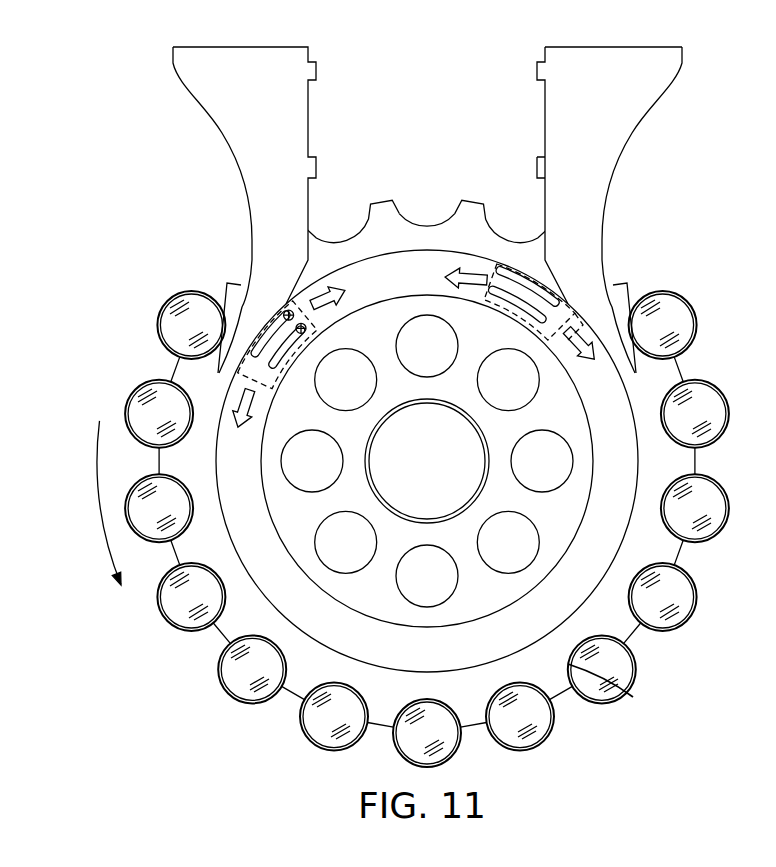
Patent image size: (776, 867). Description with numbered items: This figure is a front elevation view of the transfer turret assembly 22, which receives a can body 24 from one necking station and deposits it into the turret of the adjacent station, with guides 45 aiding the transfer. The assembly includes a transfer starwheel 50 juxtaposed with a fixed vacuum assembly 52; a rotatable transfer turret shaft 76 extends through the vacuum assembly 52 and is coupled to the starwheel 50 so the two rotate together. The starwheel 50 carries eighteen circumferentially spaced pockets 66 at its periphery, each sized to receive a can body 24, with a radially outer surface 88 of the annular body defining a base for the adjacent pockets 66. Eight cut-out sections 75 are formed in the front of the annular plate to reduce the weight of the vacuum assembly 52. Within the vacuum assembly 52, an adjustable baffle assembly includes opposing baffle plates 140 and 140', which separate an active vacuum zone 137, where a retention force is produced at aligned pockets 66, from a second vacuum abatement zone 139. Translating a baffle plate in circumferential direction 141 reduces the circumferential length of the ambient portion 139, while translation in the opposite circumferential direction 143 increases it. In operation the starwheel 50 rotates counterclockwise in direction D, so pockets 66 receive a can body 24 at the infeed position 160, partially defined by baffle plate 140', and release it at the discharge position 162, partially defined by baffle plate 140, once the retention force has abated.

The transfer turret assembly 22 is at (417, 210).
The guides 45 is at (252, 231).
The pockets 66 is at (427, 207).
The vacuum assembly 52 is at (488, 461).
The second vacuum abatement zone 139 is at (418, 286).
The active vacuum zone 137 is at (446, 658).
The transfer turret shaft 76 is at (415, 470).
The cut-out sections 75 is at (563, 457).
The transfer starwheel 50 is at (430, 527).
The can body 24 is at (638, 673).
The radially outer surface 88 is at (633, 697).
The infeed position 160 is at (157, 302).
The circumferential direction 141 is at (400, 287).
The baffle plate 140 is at (202, 345).
The baffle plate 140' is at (589, 297).
The discharge position 162 is at (578, 276).
The opposite circumferential direction 143 is at (235, 412).
The direction of rotation D is at (97, 494).